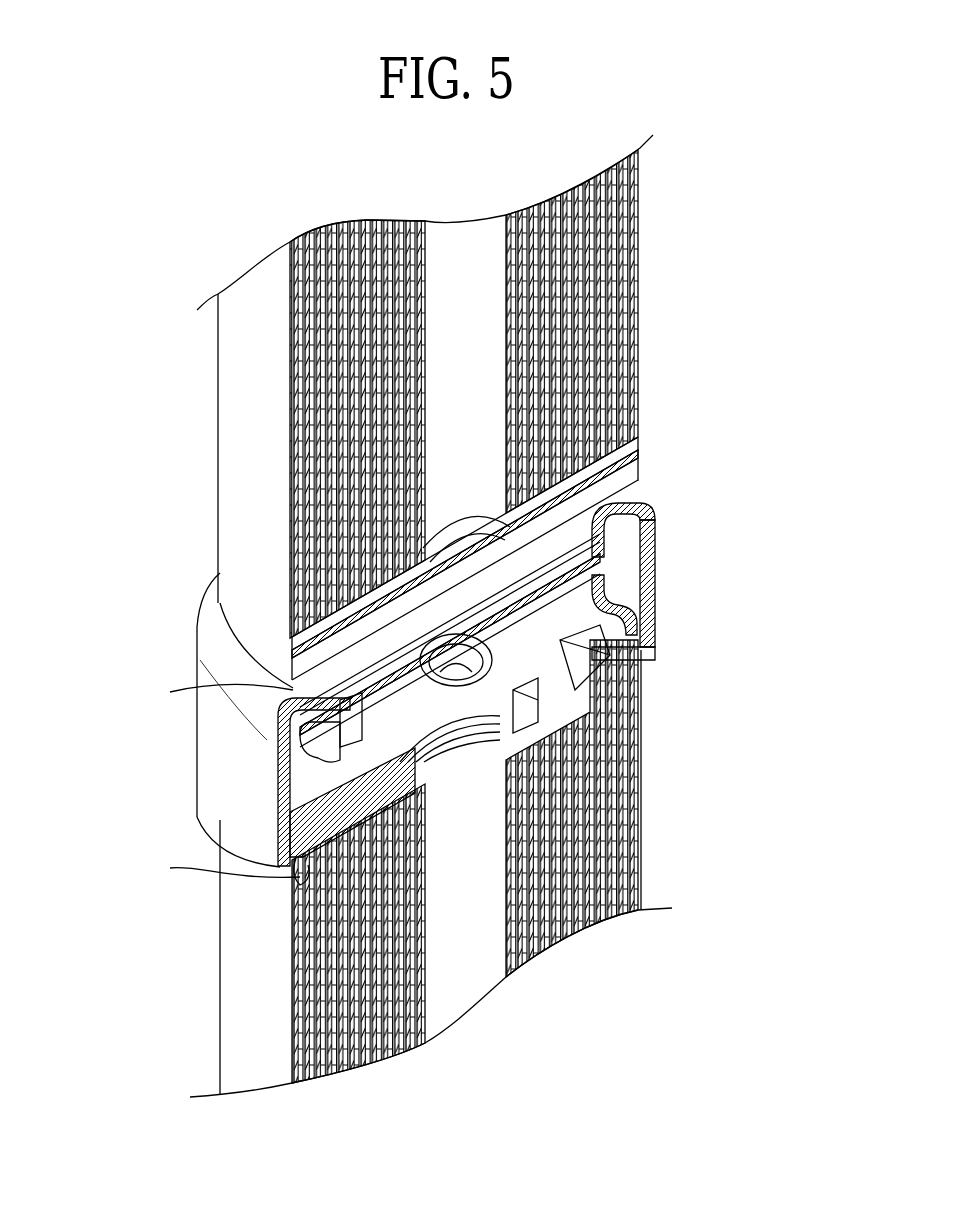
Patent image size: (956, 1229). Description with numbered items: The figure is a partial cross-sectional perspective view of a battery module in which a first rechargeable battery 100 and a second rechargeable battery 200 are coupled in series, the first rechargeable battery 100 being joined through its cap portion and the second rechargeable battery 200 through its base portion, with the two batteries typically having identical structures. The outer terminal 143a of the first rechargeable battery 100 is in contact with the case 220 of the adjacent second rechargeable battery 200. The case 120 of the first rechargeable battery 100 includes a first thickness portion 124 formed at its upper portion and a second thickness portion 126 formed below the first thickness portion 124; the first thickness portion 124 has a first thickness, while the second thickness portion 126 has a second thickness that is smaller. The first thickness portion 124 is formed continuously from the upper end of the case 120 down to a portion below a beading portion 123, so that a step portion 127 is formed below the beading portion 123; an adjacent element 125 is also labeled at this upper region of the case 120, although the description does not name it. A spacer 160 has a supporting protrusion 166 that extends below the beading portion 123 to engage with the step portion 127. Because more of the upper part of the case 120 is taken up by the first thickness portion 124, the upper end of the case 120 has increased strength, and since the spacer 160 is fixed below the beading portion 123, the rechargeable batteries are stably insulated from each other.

The first rechargeable battery 100 is at (712, 912).
The case 120 is at (656, 760).
The beading portion 123 is at (645, 600).
The first thickness portion 124 is at (652, 629).
The electrode terminal tab 125 is at (645, 537).
The second thickness portion 126 is at (640, 833).
The step portion 127 is at (647, 653).
The outer terminal 143a is at (330, 690).
The spacer 160 is at (185, 750).
The supporting protrusion 166 is at (300, 875).
The second rechargeable battery 200 is at (693, 258).
The case 220 is at (655, 366).